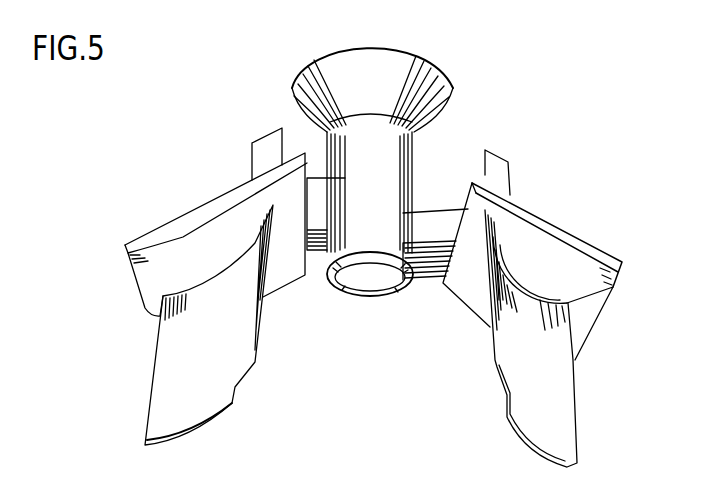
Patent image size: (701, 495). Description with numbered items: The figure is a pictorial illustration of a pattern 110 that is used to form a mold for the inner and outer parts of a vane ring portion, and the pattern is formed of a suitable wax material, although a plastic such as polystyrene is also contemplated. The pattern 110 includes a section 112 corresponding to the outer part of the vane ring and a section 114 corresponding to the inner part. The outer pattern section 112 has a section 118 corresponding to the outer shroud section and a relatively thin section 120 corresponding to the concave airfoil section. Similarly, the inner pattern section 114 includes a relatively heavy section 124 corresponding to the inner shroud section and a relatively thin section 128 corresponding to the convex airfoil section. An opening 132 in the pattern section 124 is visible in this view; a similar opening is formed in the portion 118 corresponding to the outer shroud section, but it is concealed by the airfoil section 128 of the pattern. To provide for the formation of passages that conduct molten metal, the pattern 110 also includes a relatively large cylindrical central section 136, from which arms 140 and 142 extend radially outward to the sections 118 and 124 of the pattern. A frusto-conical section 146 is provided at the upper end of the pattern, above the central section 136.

The pattern 110 is at (580, 91).
The pattern section corresponding to the outer part 112 is at (108, 280).
The pattern section corresponding to the inner part 114 is at (633, 256).
The section corresponding to the outer shroud section 118 is at (179, 233).
The relatively thin section corresponding to the concave airfoil section 120 is at (160, 415).
The relatively heavy section corresponding to the inner shroud section 124 is at (603, 205).
The relatively thin section corresponding to the convex airfoil section 128 is at (556, 436).
The opening 132 is at (567, 303).
The cylindrical central section 136 is at (373, 240).
The arm 140 is at (322, 188).
The arm 142 is at (432, 212).
The frusto-conical section 146 is at (433, 83).